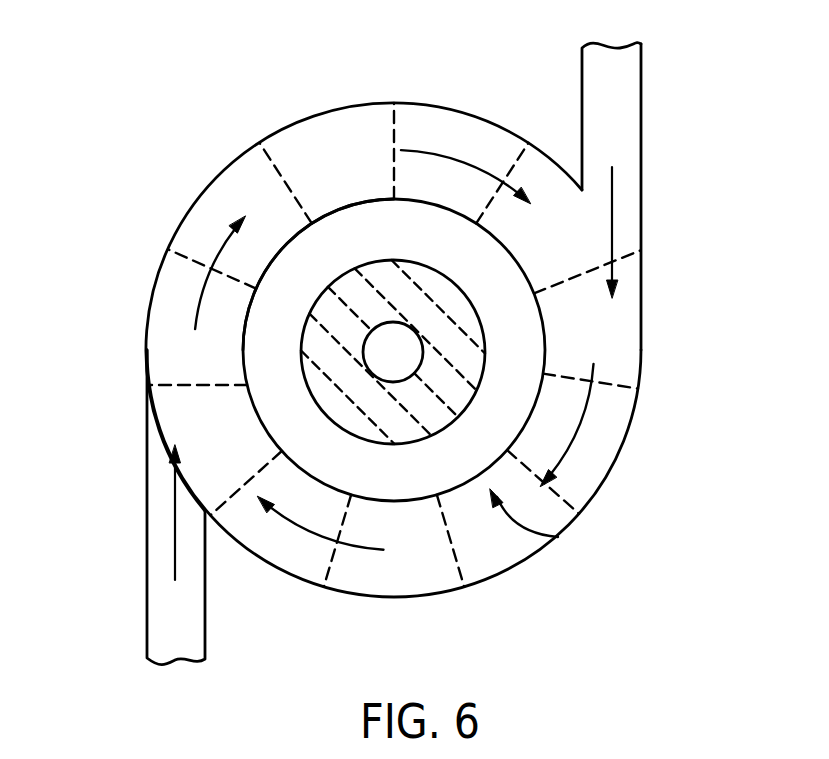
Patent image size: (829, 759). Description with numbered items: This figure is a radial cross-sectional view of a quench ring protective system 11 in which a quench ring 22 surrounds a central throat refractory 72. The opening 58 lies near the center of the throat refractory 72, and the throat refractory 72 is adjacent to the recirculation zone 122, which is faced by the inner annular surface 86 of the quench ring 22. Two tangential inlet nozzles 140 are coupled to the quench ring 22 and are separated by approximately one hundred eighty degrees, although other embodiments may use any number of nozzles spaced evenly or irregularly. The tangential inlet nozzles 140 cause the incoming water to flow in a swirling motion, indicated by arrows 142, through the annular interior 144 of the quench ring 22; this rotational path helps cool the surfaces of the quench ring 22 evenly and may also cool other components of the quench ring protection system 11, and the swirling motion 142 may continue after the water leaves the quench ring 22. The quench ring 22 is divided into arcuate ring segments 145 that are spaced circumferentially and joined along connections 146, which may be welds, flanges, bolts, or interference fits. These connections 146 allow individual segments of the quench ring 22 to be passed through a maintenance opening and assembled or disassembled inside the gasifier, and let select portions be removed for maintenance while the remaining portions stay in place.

The quench ring protection system 11 is at (558, 537).
The quench ring 22 is at (482, 585).
The opening 58 is at (408, 367).
The throat refractory 72 is at (458, 330).
The inner annular surface 86 is at (250, 298).
The recirculation zone 122 is at (537, 354).
The tangential inlet nozzles 140 is at (641, 105).
The swirling motion 142 is at (468, 164).
The annular interior 144 is at (626, 320).
The arcuate ring segments 145 is at (206, 193).
The connections 146 is at (285, 183).